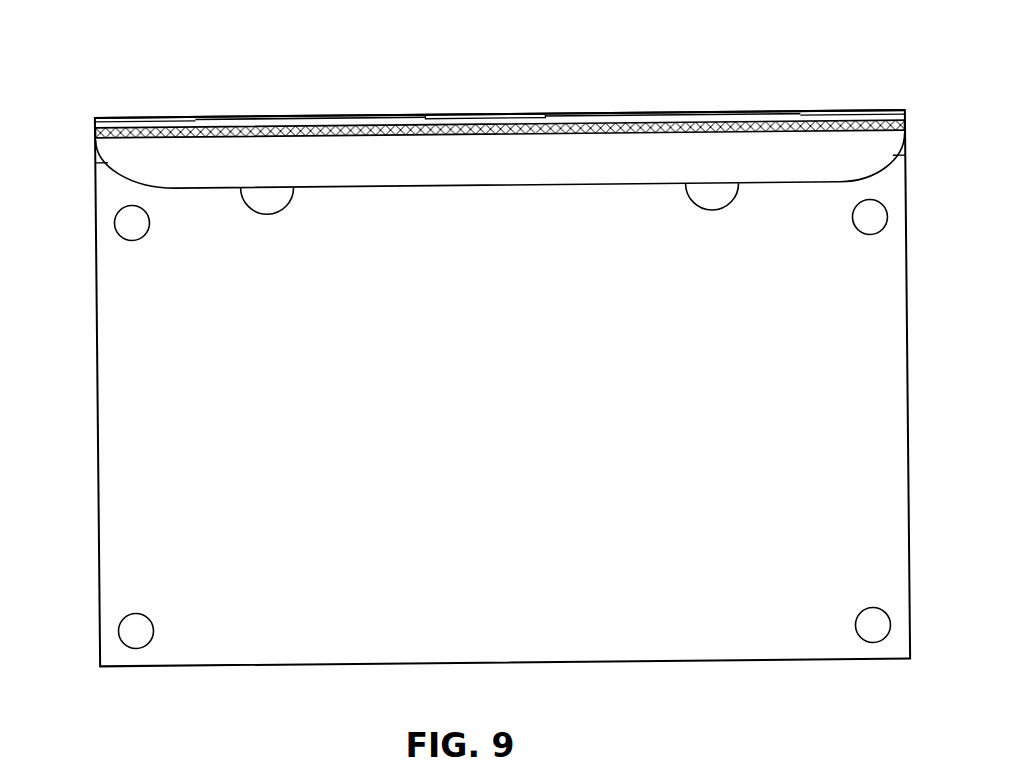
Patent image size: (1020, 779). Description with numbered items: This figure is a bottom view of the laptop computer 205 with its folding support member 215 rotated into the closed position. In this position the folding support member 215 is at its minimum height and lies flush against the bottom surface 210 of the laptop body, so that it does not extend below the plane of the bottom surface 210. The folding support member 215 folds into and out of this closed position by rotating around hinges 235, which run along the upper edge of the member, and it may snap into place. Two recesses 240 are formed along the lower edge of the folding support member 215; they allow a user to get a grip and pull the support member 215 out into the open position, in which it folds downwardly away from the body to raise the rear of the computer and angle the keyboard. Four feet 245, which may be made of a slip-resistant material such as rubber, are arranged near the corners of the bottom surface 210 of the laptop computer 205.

The laptop computer 205 is at (668, 98).
The bottom surface 210 is at (147, 372).
The folding support member 215 is at (145, 164).
The hinges 235 is at (476, 117).
The recesses 240 is at (270, 190).
The feet 245 is at (876, 632).